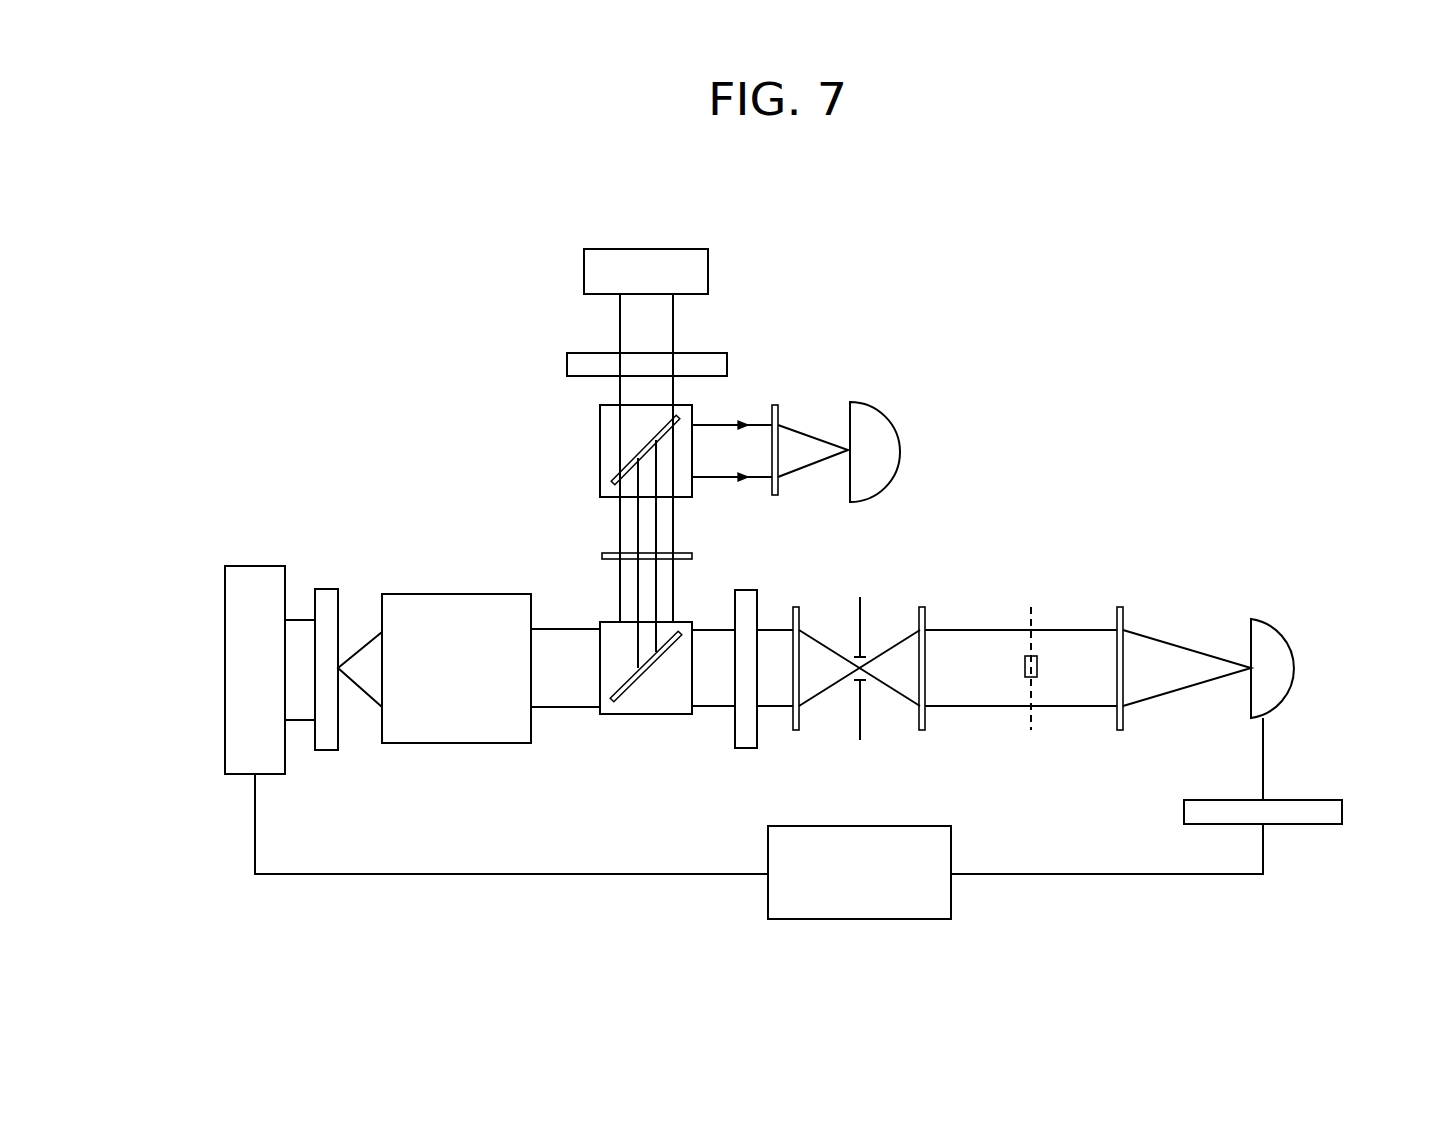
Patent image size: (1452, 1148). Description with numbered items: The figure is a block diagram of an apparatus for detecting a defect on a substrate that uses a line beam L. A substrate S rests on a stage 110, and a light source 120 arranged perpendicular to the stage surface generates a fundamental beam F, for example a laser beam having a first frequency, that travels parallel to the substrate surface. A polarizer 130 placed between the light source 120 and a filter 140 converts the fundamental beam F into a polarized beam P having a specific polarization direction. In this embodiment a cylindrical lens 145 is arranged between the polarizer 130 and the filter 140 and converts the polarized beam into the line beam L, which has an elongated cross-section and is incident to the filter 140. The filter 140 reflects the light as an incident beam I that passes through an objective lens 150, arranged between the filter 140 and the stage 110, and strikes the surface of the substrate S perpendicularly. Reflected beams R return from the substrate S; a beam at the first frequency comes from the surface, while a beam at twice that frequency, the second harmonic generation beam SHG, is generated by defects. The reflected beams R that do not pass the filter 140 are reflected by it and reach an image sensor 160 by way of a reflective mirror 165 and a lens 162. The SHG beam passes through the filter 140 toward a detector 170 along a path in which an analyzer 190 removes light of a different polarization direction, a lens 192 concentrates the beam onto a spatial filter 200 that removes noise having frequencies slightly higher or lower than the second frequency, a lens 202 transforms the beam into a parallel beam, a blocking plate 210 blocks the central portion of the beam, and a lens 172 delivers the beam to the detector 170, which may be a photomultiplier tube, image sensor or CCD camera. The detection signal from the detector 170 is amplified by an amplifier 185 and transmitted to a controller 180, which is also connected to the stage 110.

The stage 110 is at (225, 668).
The light source 120 is at (584, 270).
The polarizer 130 is at (567, 365).
The filter 140 is at (645, 715).
The cylindrical lens 145 is at (602, 556).
The objective lens 150 is at (455, 743).
The image sensor 160 is at (898, 450).
The lens 162 is at (775, 495).
The reflective mirror 165 is at (633, 455).
The detector 170 is at (1302, 668).
The lens 172 is at (1120, 730).
The controller 180 is at (951, 910).
The amplifier 185 is at (1342, 810).
The analyzer 190 is at (743, 748).
The lens 192 is at (795, 730).
The spatial filter 200 is at (860, 617).
The lens 202 is at (922, 730).
The blocking plate 210 is at (1025, 668).
The fundamental beam F is at (673, 315).
The polarized beam P is at (620, 393).
The reflected beams R is at (727, 480).
The line beam L is at (674, 577).
The incident beam I is at (563, 707).
The substrate S is at (325, 750).
The second harmonic generation beam SHG is at (972, 630).